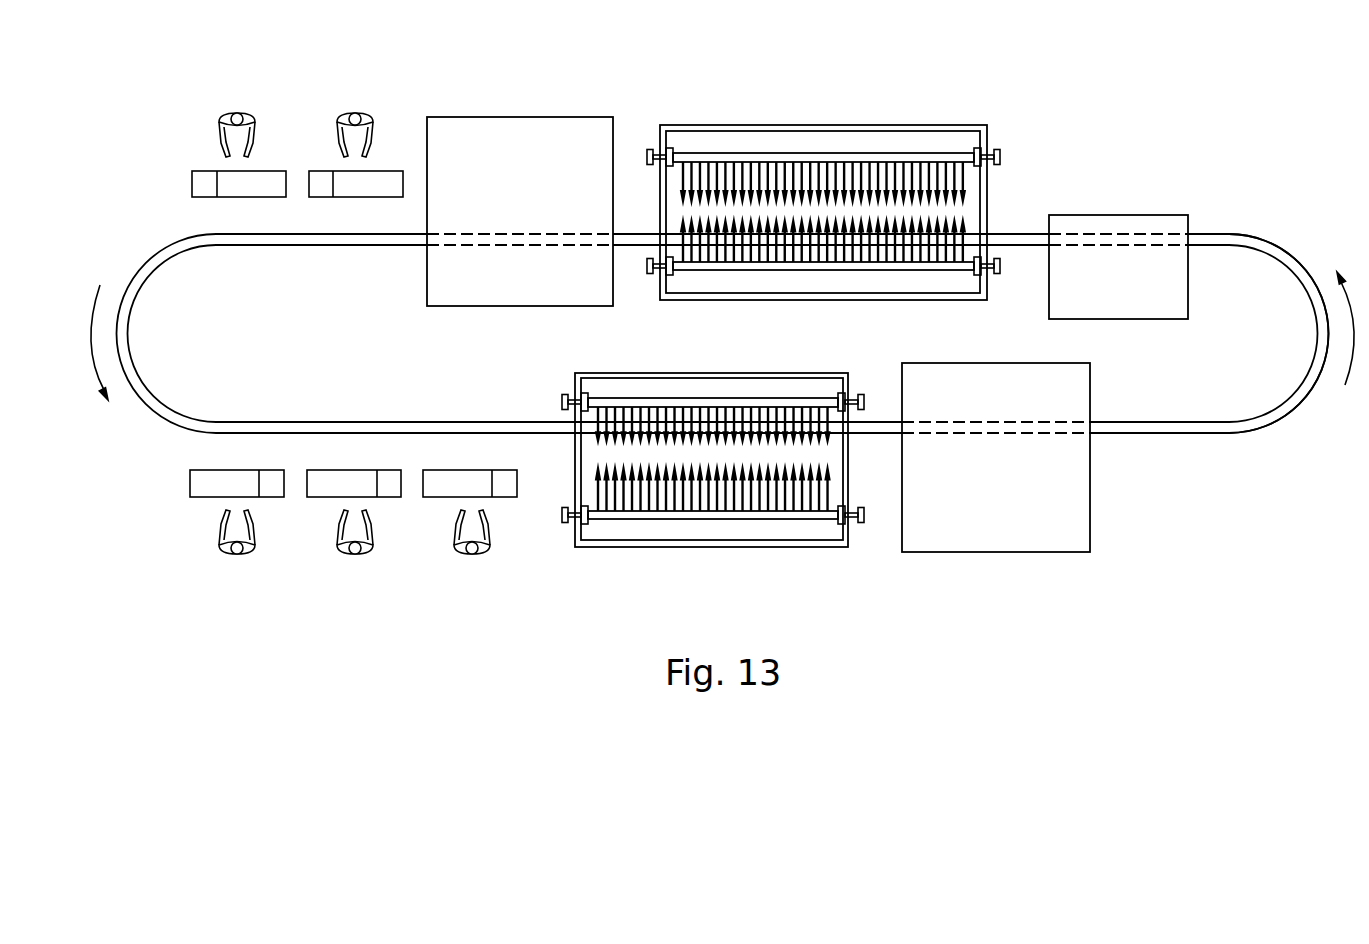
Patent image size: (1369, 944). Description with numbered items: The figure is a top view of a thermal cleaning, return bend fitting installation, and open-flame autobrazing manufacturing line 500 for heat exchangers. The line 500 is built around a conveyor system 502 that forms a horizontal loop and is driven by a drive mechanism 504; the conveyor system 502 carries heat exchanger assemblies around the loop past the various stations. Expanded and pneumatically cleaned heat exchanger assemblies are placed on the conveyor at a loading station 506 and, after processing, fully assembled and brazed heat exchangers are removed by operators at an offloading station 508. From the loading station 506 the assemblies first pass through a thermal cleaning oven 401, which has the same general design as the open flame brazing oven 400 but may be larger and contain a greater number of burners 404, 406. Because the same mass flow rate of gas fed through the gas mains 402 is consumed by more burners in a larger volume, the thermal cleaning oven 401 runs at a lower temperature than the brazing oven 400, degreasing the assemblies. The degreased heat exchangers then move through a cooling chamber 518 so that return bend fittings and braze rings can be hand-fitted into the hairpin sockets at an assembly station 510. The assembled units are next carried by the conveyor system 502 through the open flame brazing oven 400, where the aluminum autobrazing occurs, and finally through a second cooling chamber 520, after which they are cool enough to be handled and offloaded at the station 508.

The manufacturing line 500 is at (706, 326).
The conveyor system 502 is at (1309, 394).
The drive mechanism 504 is at (1120, 215).
The loading station 506 is at (1217, 234).
The offloading station 508 is at (1190, 433).
The assembly station 510 is at (155, 253).
The cooling chamber 518 is at (478, 117).
The cooling chamber 520 is at (1052, 553).
The open flame brazing oven 400 is at (727, 547).
The thermal cleaning oven 401 is at (890, 125).
The gas mains 402 is at (1000, 264).
The burners 404 is at (683, 225).
The burners 406 is at (683, 197).